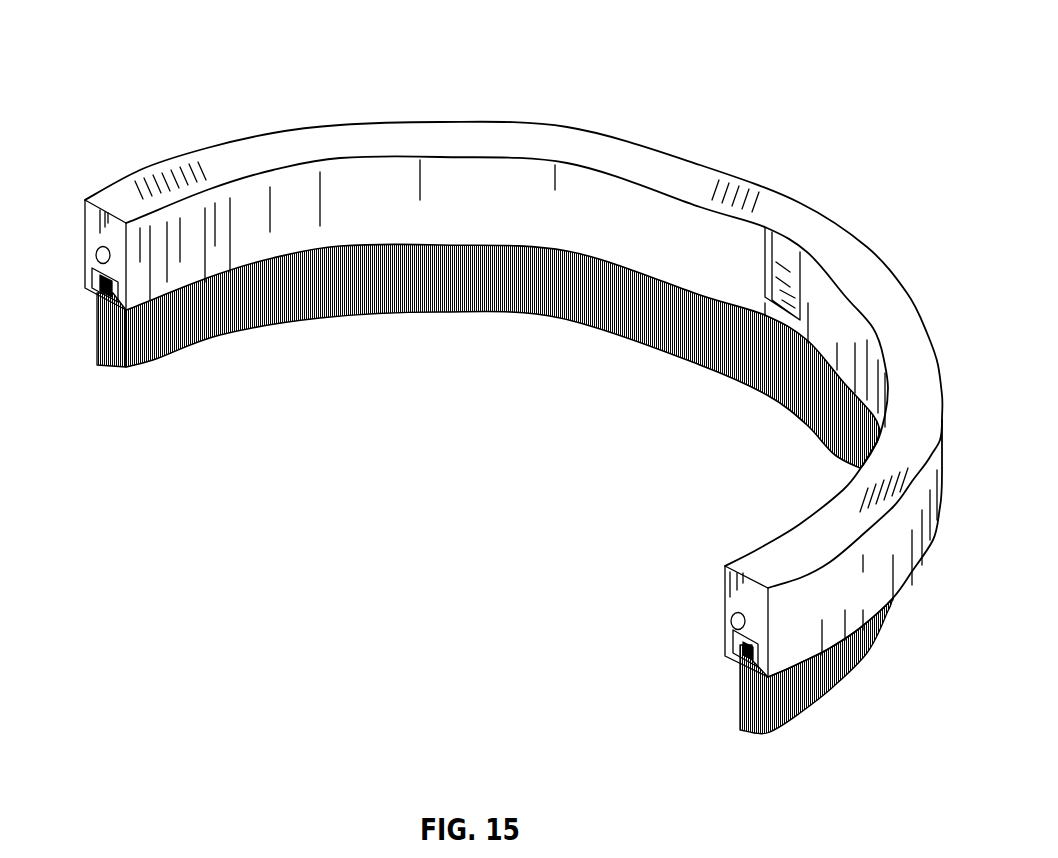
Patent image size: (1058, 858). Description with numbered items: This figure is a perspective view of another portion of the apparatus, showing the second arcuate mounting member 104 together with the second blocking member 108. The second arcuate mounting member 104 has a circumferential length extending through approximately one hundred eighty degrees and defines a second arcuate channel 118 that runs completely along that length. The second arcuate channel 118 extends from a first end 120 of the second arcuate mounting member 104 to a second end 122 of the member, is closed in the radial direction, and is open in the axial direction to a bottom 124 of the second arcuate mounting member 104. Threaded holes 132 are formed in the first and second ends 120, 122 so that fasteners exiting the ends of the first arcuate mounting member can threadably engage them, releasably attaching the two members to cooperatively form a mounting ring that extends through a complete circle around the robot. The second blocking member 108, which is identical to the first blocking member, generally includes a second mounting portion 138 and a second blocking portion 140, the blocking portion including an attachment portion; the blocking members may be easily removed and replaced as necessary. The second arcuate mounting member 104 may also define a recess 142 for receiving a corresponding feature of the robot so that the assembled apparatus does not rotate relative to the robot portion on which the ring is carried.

The second arcuate mounting member 104 is at (246, 38).
The second blocking member 108 is at (94, 328).
The second arcuate channel 118 is at (760, 650).
The first end 120 is at (730, 590).
The second end 122 is at (98, 237).
The bottom 124 is at (915, 567).
The threaded holes 132 is at (96, 257).
The second mounting portion 138 is at (728, 643).
The second blocking portion 140 is at (217, 317).
The recess 142 is at (788, 252).